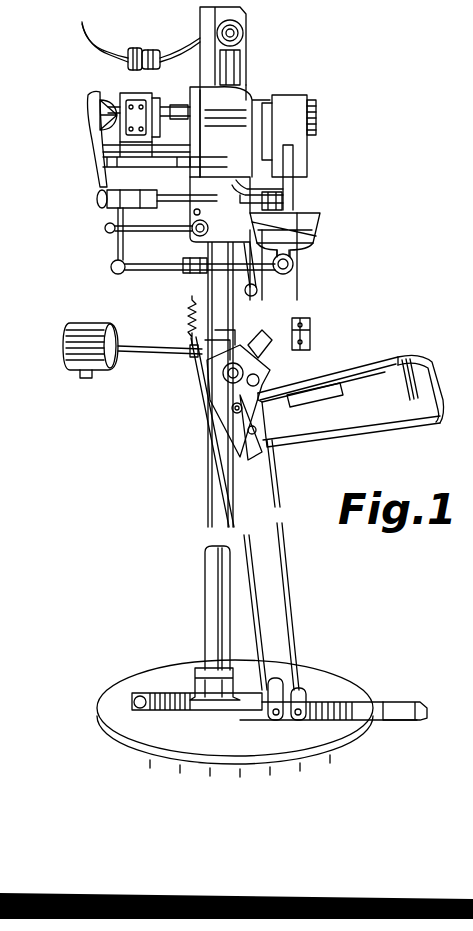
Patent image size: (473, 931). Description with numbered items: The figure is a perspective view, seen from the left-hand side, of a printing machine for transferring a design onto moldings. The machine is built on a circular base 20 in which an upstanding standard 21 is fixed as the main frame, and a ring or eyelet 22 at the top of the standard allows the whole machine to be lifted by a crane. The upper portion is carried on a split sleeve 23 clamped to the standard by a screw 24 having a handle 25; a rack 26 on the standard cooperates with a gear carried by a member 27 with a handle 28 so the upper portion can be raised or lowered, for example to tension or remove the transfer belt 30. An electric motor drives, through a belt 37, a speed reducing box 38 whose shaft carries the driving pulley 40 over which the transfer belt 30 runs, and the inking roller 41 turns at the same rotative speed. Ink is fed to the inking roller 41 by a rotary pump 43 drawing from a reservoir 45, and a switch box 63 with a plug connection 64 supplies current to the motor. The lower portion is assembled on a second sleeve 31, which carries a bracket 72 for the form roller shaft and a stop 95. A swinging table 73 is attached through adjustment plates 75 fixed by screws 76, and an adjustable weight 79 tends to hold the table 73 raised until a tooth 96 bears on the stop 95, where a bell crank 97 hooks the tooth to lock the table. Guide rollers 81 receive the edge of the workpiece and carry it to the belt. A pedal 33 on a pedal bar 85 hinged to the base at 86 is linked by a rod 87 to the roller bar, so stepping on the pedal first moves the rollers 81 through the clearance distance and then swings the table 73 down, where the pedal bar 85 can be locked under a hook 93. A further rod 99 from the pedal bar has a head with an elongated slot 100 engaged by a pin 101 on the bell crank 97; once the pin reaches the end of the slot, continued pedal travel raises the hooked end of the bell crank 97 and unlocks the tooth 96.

The base 20 is at (130, 673).
The standard 21 is at (210, 497).
The ring or eyelet 22 is at (201, 14).
The sleeve 23 is at (240, 84).
The screw 24 is at (305, 216).
The handle 25 is at (300, 235).
The rack 26 is at (185, 271).
The member 27 is at (114, 261).
The handle 28 is at (106, 228).
The transfer belt 30 is at (290, 96).
The sleeve 31 is at (224, 377).
The pedal 33 is at (400, 702).
The belt 37 is at (100, 146).
The speed reducing box 38 is at (130, 98).
The driving pulley 40 is at (318, 114).
The inking roller 41 is at (300, 163).
The rotary pump 43 is at (100, 196).
The reservoir 45 is at (300, 194).
The switch box 63 is at (244, 40).
The plug connection 64 is at (160, 48).
The bracket 72 is at (311, 330).
The swinging table 73 is at (400, 360).
The adjustment plates 75 is at (250, 423).
The screws 76 is at (233, 409).
The adjustable weight 79 is at (85, 371).
The guide rollers 81 is at (280, 372).
The pedal bar 85 is at (332, 700).
The hinge 86 is at (140, 710).
The rod 87 is at (283, 505).
The hook 93 is at (250, 704).
The stop 95 is at (210, 370).
The tooth 96 is at (252, 349).
The bell crank 97 is at (232, 340).
The rod 99 is at (214, 400).
The elongated slot 100 is at (195, 344).
The pin 101 is at (188, 314).